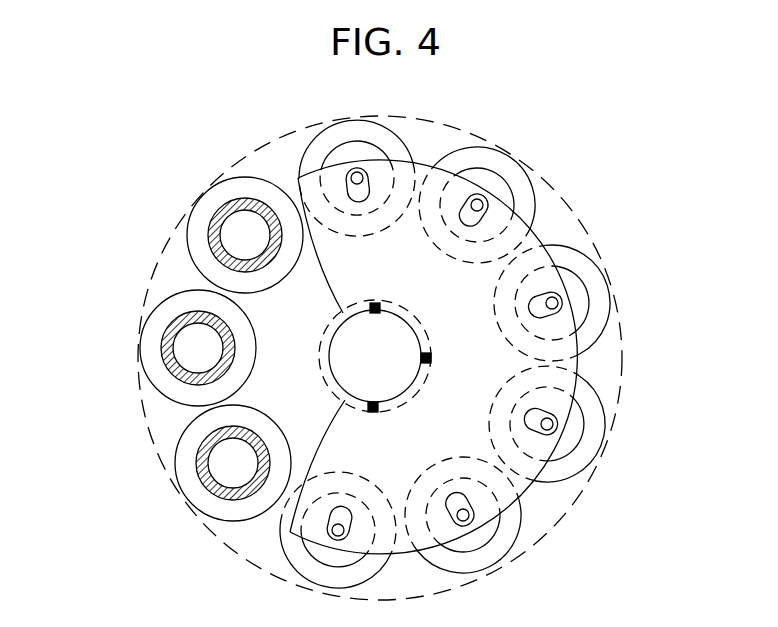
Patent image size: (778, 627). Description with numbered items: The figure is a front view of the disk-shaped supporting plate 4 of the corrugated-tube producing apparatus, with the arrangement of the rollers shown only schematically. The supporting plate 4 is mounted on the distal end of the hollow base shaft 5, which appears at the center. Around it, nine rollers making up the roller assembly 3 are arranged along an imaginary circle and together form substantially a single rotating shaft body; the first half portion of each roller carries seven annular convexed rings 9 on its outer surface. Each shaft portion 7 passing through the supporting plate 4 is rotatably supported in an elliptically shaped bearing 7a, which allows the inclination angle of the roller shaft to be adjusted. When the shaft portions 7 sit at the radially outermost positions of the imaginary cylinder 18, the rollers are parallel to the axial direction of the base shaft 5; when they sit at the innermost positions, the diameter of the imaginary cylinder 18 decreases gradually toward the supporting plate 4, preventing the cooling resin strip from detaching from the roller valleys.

The roller assembly 3 is at (113, 485).
The supporting plate 4 is at (542, 237).
The base shaft 5 is at (397, 310).
The shaft portion 7 is at (555, 303).
The elliptically shaped bearing 7a is at (368, 190).
The convexed ring 9 is at (186, 234).
The imaginary cylinder 18 is at (543, 177).